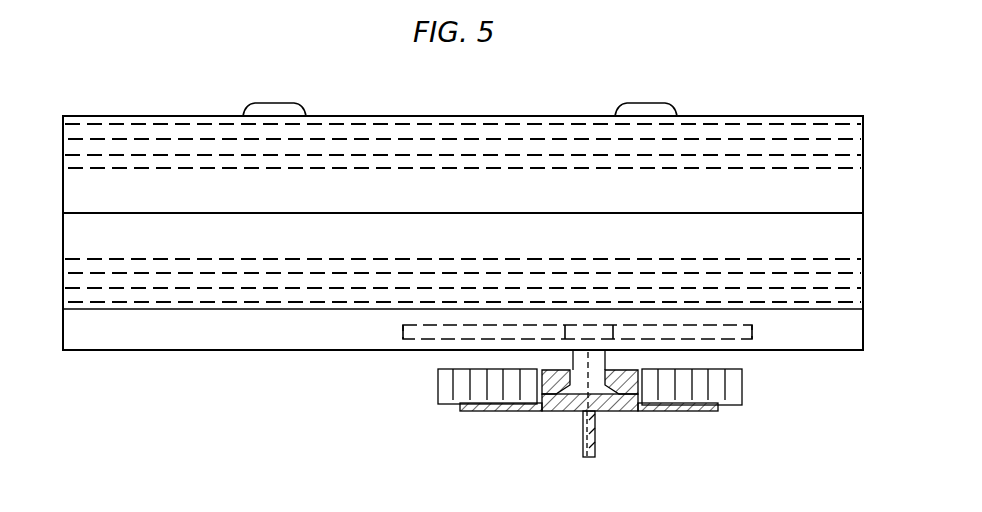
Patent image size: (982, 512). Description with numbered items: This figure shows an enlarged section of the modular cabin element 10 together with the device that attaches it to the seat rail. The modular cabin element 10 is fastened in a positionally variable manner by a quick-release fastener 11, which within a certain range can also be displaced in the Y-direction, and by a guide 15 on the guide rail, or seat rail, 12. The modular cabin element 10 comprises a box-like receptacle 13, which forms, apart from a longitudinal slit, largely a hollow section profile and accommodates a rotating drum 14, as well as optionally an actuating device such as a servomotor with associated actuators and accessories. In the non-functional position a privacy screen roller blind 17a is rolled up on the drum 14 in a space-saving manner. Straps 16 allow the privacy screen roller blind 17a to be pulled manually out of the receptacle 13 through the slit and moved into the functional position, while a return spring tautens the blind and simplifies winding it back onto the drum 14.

The modular cabin element 10 is at (743, 115).
The quick-release fastener 11 is at (576, 330).
The guide rail (seat rail) 12 is at (553, 404).
The box-like receptacle 13 is at (180, 335).
The rotating drum 14 is at (332, 190).
The guide 15 is at (609, 400).
The straps 16 is at (273, 103).
The privacy screen roller blind 17a is at (393, 124).